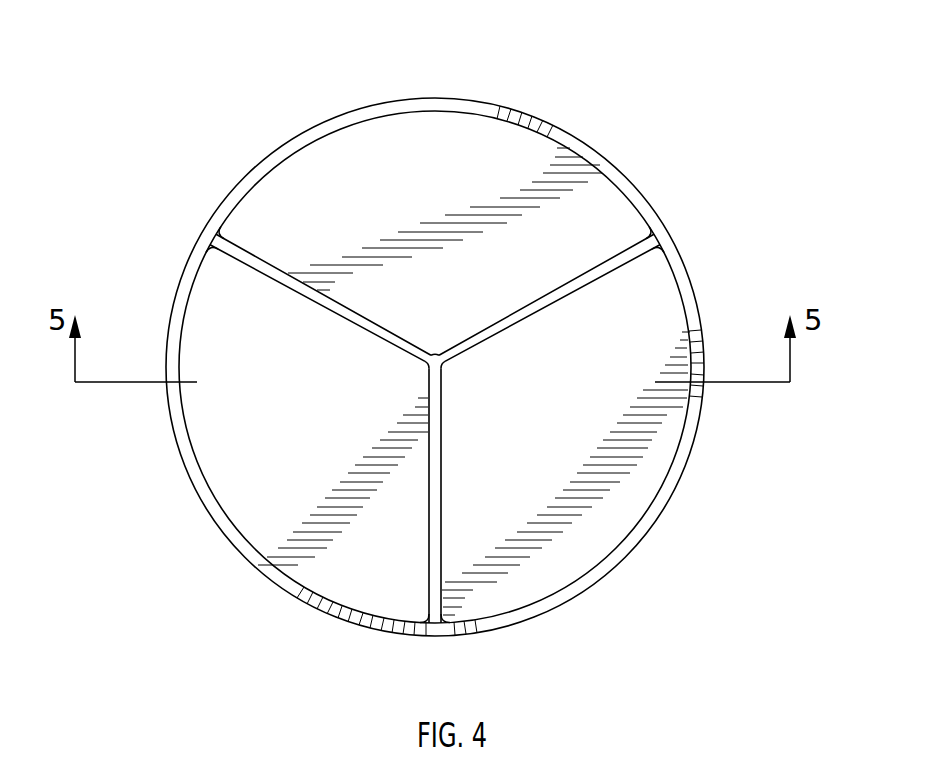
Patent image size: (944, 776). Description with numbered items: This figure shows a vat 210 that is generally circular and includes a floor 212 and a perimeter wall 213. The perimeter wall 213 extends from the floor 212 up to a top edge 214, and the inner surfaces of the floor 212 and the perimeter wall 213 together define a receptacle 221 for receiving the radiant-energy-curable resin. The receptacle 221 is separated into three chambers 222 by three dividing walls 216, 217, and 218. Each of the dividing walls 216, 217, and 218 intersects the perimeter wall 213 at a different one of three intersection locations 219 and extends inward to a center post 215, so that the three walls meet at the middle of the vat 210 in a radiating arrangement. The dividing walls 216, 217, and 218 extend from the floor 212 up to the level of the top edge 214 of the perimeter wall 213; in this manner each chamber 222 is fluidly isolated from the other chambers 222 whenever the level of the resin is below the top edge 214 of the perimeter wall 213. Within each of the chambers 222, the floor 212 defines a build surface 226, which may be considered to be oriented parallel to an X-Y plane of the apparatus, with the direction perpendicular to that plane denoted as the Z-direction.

The vat 210 is at (720, 142).
The floor 212 is at (328, 447).
The perimeter wall 213 is at (280, 577).
The top edge 214 is at (687, 288).
The center post 215 is at (437, 352).
The dividing wall 216 is at (243, 254).
The dividing wall 217 is at (428, 550).
The dividing wall 218 is at (596, 268).
The intersection location 219 is at (217, 238).
The receptacle 221 is at (203, 450).
The chamber 222 is at (222, 307).
The build surface 226 is at (451, 193).